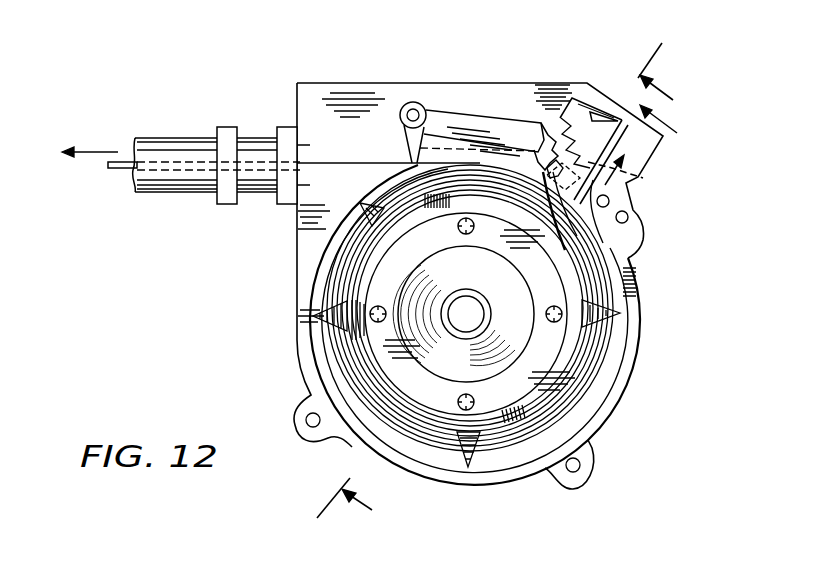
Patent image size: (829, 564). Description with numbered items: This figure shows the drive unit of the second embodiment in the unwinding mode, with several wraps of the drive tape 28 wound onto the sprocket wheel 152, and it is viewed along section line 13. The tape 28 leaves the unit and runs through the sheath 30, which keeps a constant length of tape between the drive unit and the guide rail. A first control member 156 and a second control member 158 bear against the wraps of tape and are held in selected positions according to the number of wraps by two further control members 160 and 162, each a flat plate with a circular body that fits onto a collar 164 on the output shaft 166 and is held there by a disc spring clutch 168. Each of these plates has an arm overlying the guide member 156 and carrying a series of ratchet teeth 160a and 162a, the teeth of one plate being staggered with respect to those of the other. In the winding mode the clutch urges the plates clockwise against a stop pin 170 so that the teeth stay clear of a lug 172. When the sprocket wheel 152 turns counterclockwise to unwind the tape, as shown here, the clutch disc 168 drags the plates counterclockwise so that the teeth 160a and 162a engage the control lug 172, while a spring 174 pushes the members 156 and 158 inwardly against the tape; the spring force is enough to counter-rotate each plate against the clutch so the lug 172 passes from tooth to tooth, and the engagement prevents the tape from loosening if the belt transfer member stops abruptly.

The section line 13 is at (506, 294).
The drive tape 28 is at (121, 170).
The sheath 30 is at (173, 150).
The sprocket wheel 152 is at (505, 420).
The first control member 156 is at (553, 166).
The second control member 158 is at (457, 117).
The control member 160 is at (560, 231).
The ratchet teeth 160a is at (546, 146).
The control member 162 is at (620, 148).
The ratchet teeth 162a is at (633, 178).
The collar 164 is at (490, 300).
The output shaft 166 is at (455, 306).
The disc spring clutch 168 is at (520, 340).
The stop pin 170 is at (609, 203).
The lug 172 is at (559, 156).
The spring 174 is at (590, 121).